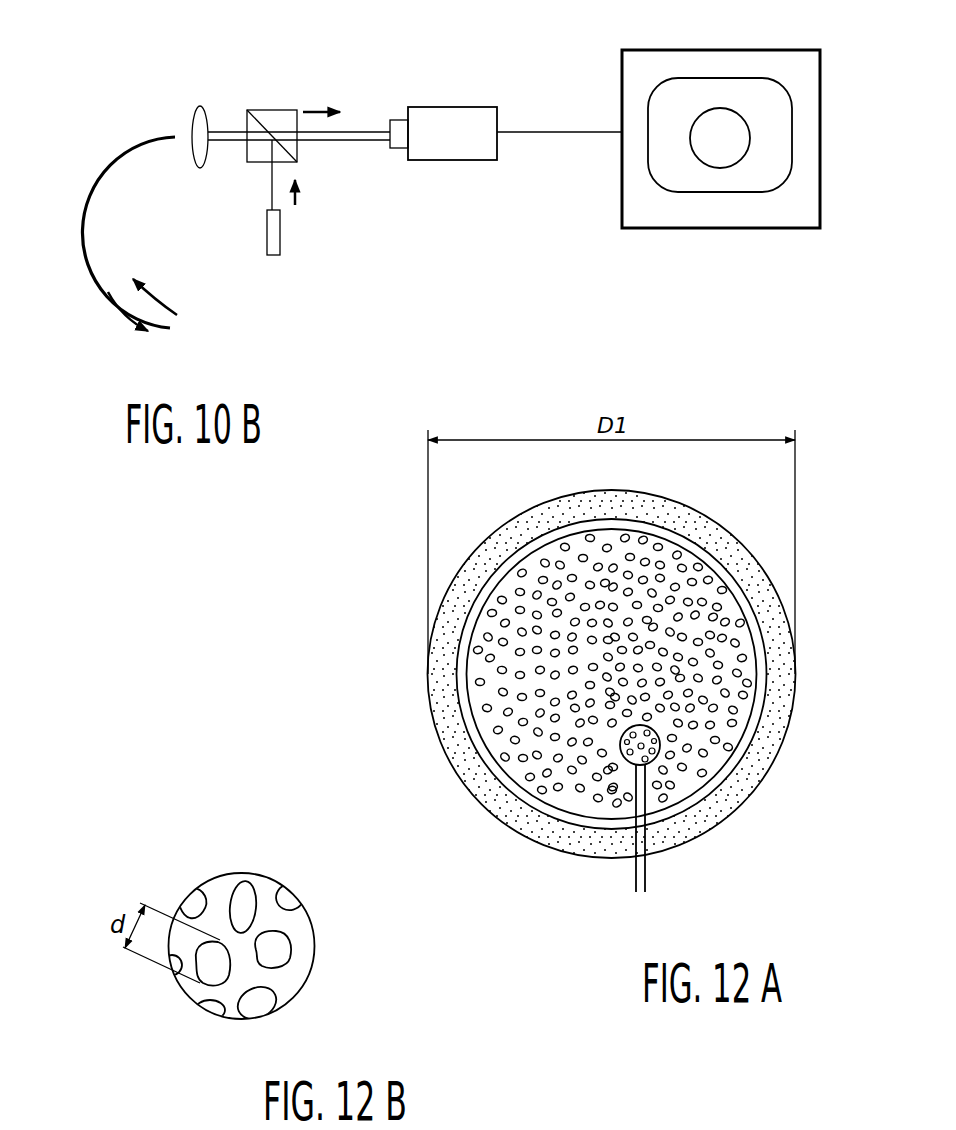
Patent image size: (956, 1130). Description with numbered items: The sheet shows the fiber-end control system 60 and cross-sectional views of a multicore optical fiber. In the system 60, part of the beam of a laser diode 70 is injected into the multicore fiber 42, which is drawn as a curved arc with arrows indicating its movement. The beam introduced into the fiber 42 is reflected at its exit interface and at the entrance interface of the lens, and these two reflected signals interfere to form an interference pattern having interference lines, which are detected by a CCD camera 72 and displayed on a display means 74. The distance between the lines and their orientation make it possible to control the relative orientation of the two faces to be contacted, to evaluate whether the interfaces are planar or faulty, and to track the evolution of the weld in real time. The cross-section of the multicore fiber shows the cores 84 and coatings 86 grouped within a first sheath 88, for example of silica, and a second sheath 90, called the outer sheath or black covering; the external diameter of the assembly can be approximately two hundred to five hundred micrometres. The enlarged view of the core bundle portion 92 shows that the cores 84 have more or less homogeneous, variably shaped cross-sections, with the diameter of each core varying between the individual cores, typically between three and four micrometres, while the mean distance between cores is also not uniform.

In FIG. 10B, the multicore fiber 42 is at (121, 153).
In FIG. 10B, the system 60 is at (289, 72).
In FIG. 10B, the laser diode 70 is at (267, 225).
In FIG. 10B, the CCD camera 72 is at (465, 152).
In FIG. 10B, the display means 74 is at (627, 65).
In FIG. 12A, the cores 84 is at (505, 714).
In FIG. 12B, the cores 84 is at (218, 980).
In FIG. 12A, the coatings 86 is at (567, 800).
In FIG. 12B, the coatings 86 is at (223, 876).
In FIG. 12A, the first sheath 88 is at (520, 553).
In FIG. 12A, the second sheath 90 is at (707, 520).
In FIG. 12A, the core bundle portion 92 is at (660, 745).
In FIG. 12B, the core bundle portion 92 is at (310, 973).